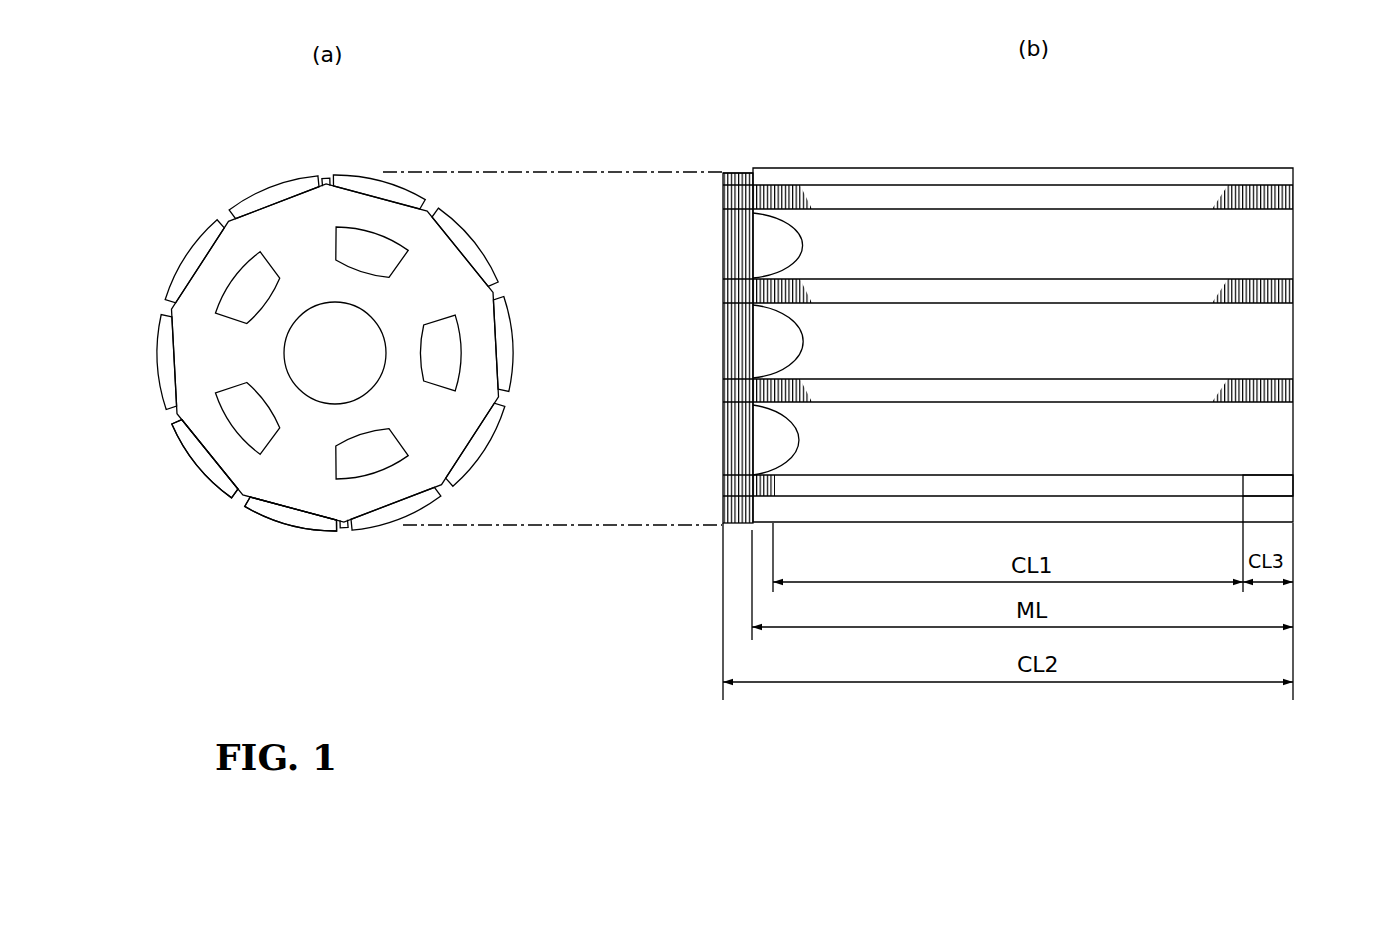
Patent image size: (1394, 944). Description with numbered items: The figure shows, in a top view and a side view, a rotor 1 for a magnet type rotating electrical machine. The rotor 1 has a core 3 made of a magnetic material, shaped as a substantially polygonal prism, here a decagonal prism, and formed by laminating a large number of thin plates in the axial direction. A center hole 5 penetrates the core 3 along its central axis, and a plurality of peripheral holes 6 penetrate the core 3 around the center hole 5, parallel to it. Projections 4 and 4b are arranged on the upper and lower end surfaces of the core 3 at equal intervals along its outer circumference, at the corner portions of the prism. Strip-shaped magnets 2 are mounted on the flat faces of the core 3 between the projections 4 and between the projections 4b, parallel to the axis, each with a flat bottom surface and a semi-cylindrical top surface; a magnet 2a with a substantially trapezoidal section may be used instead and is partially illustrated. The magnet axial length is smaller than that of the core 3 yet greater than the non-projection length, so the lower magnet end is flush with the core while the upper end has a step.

The rotor 1 is at (224, 191).
The magnet 2 is at (467, 241).
The magnet 2a is at (273, 512).
The core 3 is at (476, 361).
The projection 4 is at (447, 488).
The projection 4b is at (1285, 483).
The center hole 5 is at (287, 337).
The peripheral hole 6 is at (459, 386).